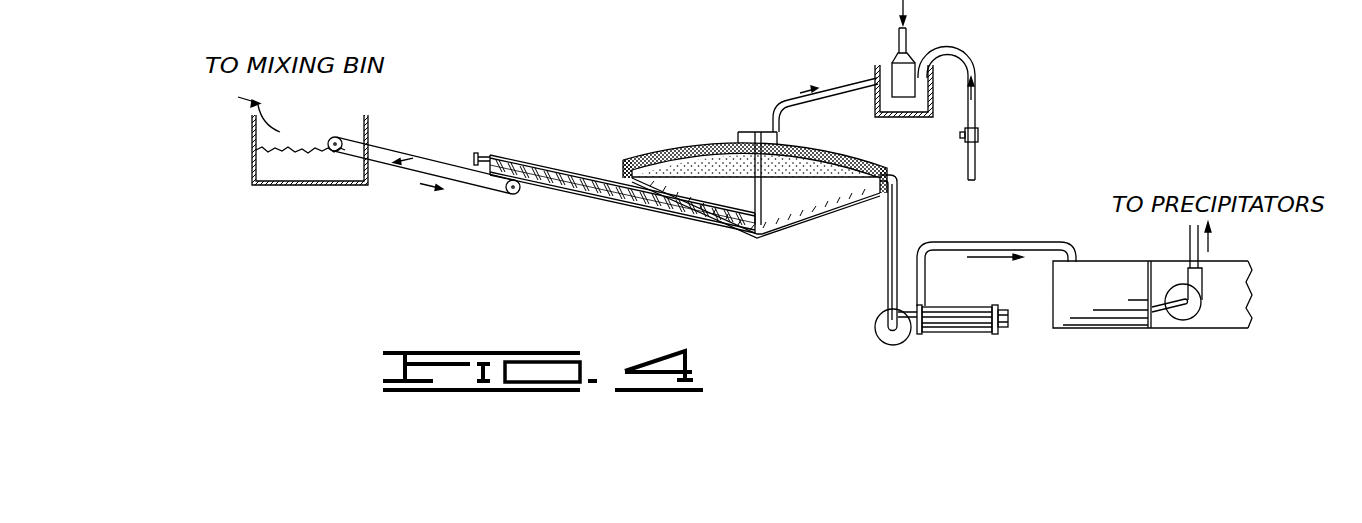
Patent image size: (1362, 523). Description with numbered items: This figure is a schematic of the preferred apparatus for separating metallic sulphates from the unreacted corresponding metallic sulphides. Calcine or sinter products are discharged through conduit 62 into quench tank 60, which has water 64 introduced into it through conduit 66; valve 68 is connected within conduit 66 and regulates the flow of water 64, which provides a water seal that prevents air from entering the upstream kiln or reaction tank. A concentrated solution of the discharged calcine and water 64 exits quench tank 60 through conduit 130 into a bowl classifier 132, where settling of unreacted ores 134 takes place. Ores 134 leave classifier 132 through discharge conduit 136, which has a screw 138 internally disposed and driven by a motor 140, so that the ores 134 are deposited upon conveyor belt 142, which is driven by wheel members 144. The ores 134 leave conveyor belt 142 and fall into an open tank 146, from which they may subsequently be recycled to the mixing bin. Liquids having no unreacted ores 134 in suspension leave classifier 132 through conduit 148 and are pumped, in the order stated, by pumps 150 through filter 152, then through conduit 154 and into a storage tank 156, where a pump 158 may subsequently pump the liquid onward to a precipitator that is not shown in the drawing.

The quench tank 60 is at (875, 100).
The conduit 62 is at (907, 34).
The water 64 is at (901, 102).
The conduit 66 is at (976, 70).
The valve 68 is at (979, 131).
The conduit 130 is at (786, 103).
The bowl classifier 132 is at (702, 125).
The unreacted ores 134 is at (300, 162).
The discharge conduit 136 is at (657, 214).
The screw 138 is at (602, 197).
The motor 140 is at (476, 153).
The conveyor belt 142 is at (470, 193).
The wheel members 144 is at (339, 137).
The open tank 146 is at (252, 148).
The conduit 148 is at (898, 218).
The pumps 150 is at (892, 340).
The filter 152 is at (952, 334).
The conduit 154 is at (993, 242).
The storage tank 156 is at (1103, 329).
The pump 158 is at (1194, 318).